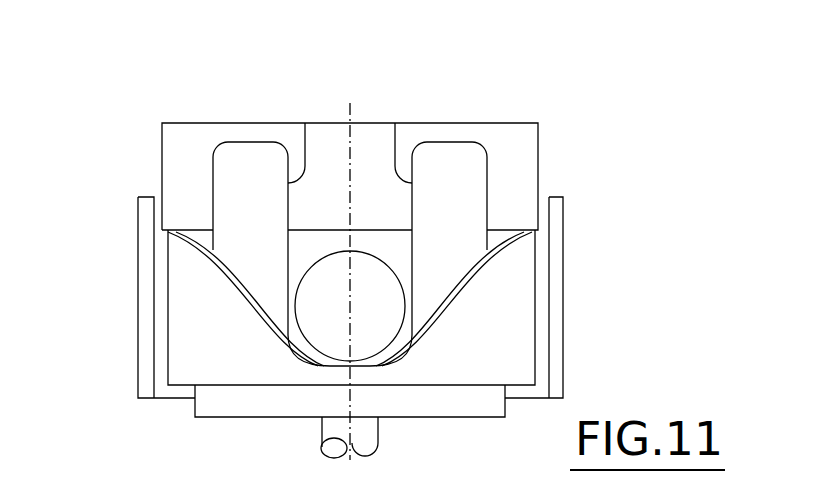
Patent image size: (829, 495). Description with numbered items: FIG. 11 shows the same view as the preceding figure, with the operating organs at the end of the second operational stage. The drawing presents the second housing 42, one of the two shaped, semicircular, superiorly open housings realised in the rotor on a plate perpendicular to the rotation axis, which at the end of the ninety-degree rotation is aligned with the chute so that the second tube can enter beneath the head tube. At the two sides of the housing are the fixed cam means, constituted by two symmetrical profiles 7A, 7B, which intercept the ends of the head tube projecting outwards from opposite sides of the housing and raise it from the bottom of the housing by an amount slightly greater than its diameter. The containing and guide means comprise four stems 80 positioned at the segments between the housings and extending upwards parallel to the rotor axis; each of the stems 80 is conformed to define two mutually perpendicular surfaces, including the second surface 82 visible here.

The stems 80 is at (482, 123).
The second surface 82 is at (303, 123).
The second housing 42 is at (299, 264).
The profile 7A is at (248, 315).
The profile 7B is at (473, 282).